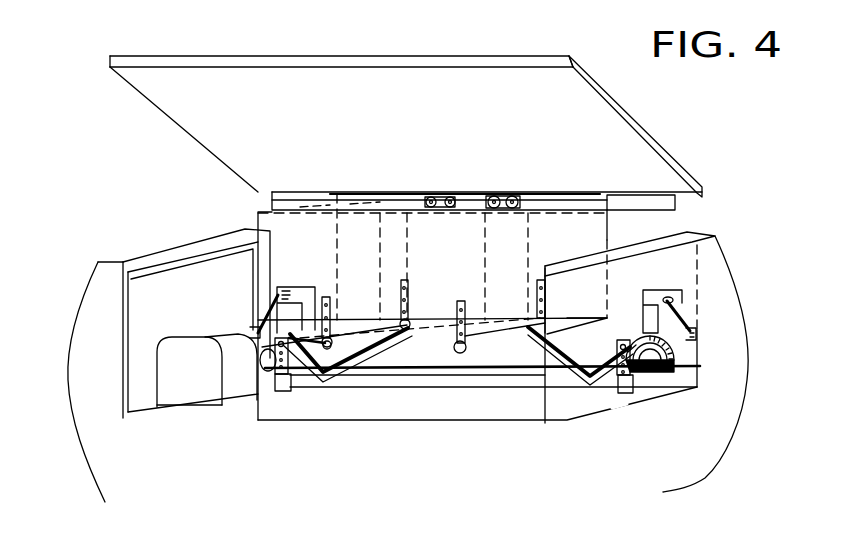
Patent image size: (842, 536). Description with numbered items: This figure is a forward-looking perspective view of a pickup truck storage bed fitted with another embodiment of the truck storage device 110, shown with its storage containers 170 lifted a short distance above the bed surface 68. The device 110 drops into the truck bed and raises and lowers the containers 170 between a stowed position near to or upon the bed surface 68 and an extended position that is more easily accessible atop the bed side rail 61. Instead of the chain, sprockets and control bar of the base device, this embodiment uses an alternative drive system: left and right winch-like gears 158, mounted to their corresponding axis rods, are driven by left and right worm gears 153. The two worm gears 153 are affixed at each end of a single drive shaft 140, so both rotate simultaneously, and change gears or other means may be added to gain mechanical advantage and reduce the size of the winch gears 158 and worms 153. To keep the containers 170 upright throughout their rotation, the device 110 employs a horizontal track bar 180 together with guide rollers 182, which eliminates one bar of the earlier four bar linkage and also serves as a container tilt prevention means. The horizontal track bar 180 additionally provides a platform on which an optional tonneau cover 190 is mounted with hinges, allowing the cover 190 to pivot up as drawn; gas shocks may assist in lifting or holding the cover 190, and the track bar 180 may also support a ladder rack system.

The truck storage device 110 is at (96, 48).
The tonneau cover 190 is at (651, 130).
The horizontal track bar 180 is at (677, 208).
The guide rollers 182 is at (438, 194).
The storage container 170 is at (262, 213).
The bed side rail 61 is at (122, 262).
The bed surface 68 is at (290, 409).
The drive shaft 140 is at (450, 368).
The worm gear 153 is at (648, 380).
The winch-like gear 158 is at (663, 363).